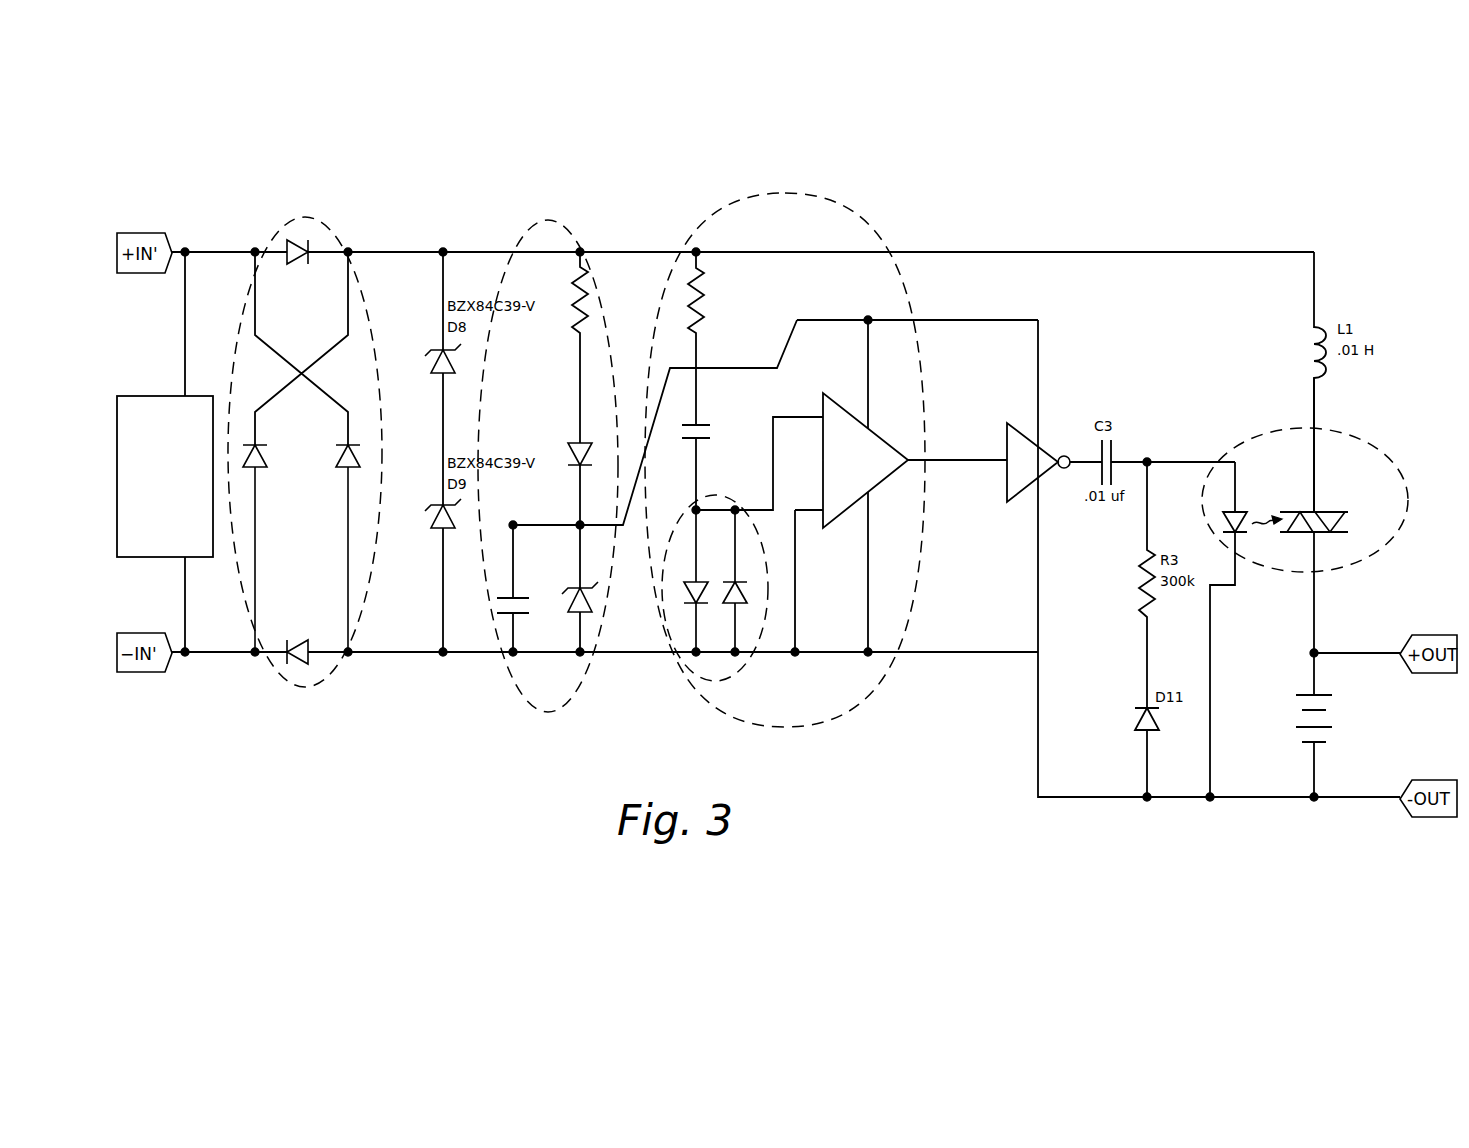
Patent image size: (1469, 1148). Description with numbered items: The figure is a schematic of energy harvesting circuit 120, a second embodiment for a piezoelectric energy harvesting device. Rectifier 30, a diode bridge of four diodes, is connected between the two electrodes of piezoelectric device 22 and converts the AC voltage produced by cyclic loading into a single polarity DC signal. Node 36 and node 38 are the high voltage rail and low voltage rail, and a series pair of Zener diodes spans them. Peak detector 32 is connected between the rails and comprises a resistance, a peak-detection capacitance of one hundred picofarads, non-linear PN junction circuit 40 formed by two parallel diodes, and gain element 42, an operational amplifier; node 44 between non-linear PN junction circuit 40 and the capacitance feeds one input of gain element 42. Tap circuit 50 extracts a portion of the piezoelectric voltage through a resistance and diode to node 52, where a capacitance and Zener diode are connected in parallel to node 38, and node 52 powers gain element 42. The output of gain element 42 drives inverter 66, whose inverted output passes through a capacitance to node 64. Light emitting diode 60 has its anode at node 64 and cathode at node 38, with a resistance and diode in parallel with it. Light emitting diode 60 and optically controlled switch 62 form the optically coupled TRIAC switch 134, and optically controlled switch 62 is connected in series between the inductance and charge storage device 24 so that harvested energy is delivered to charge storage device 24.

The piezoelectric device 22 is at (172, 396).
The charge storage device 24 is at (1338, 721).
The rectifier 30 is at (265, 690).
The peak detector 32 is at (813, 489).
The node 36 is at (350, 250).
The node 38 is at (350, 655).
The non-linear PN junction circuit 40 is at (718, 680).
The gain element 42 is at (850, 515).
The node 44 is at (694, 509).
The tap circuit 50 is at (512, 713).
The node 52 is at (578, 523).
The light emitting diode 60 is at (1240, 512).
The optically controlled switch 62 is at (1322, 512).
The node 64 is at (1149, 460).
The inverter 66 is at (1007, 435).
The energy harvesting circuit 120 is at (892, 236).
The optocoupler 134 is at (1310, 587).